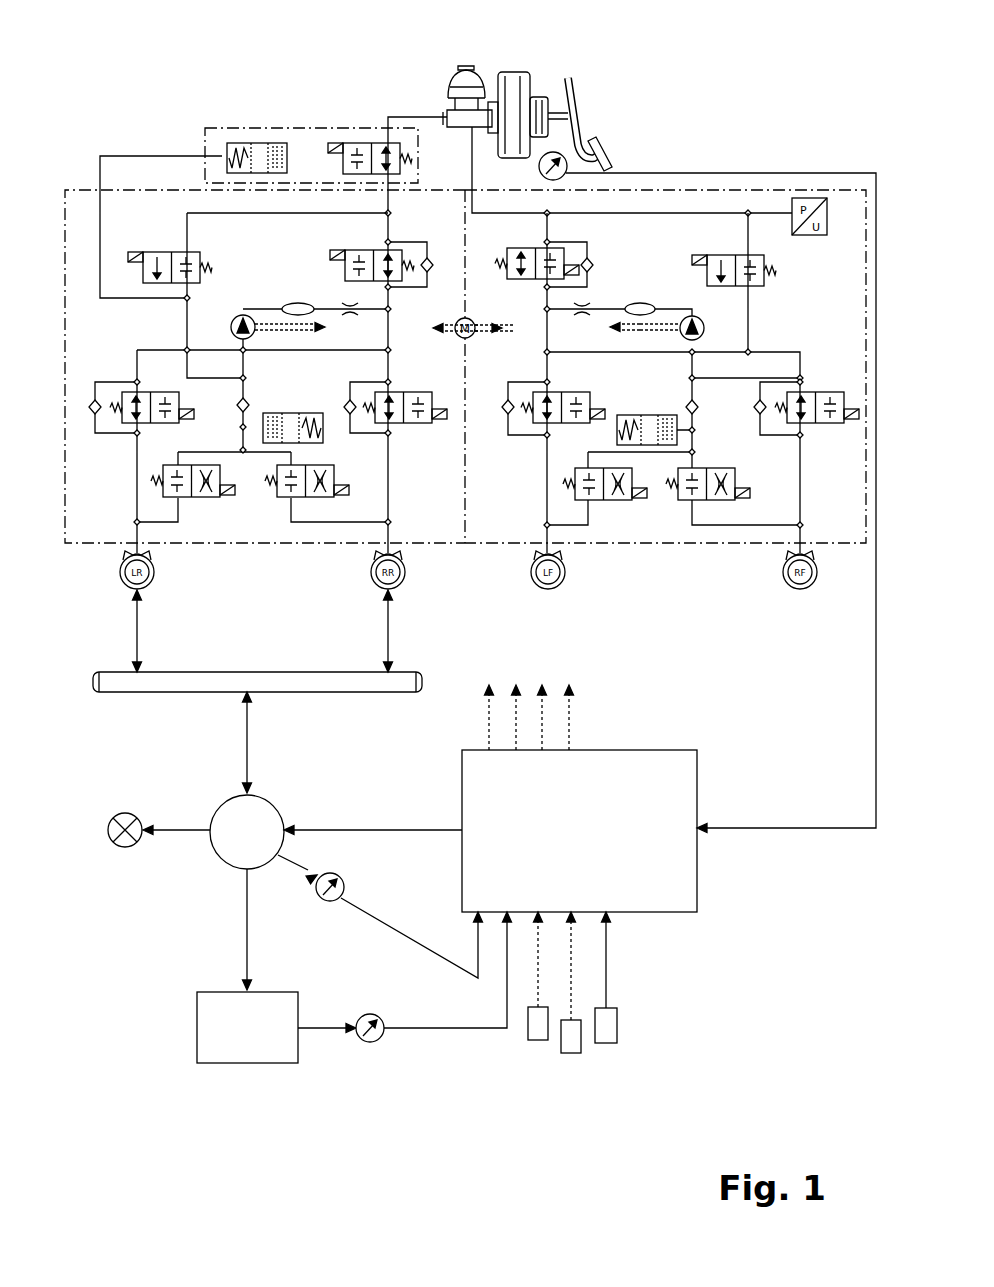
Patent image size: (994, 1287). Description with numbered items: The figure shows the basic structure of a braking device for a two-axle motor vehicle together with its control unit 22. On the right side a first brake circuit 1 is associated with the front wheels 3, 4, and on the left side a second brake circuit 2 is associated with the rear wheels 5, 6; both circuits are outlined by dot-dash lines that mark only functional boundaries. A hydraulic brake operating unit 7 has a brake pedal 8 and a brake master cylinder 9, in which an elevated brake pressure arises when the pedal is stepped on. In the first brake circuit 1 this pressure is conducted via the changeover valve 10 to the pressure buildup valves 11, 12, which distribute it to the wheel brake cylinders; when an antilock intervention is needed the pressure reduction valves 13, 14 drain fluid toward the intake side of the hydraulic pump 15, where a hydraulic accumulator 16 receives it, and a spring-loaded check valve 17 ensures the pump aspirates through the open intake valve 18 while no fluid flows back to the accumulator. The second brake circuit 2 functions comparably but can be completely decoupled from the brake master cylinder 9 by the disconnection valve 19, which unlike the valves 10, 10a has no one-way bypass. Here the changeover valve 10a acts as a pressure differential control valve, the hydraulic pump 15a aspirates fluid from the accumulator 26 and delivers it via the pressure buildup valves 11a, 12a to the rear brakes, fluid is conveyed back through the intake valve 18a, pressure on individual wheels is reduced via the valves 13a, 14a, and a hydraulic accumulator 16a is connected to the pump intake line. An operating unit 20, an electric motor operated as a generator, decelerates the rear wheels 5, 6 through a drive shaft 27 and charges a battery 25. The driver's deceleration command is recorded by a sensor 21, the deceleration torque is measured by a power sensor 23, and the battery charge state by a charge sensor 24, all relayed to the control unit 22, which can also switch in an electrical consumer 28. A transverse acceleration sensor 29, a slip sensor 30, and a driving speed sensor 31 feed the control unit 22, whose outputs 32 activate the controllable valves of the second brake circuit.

The first brake circuit 1 is at (667, 545).
The second brake circuit 2 is at (217, 545).
The front wheel 3 is at (815, 582).
The front wheel 4 is at (532, 582).
The rear wheel 5 is at (372, 577).
The rear wheel 6 is at (123, 582).
The hydraulic brake operating unit 7 is at (566, 60).
The brake pedal 8 is at (590, 138).
The brake master cylinder 9 is at (453, 130).
The changeover valve 10 is at (522, 283).
The changeover valve 10a is at (370, 280).
The pressure buildup valve 11 is at (570, 392).
The pressure buildup valve 11a is at (140, 392).
The pressure buildup valve 12 is at (828, 392).
The pressure buildup valve 12a is at (412, 423).
The pressure reduction valve 13 is at (627, 500).
The pressure reduction valve 13a is at (163, 470).
The pressure reduction valve 14 is at (738, 478).
The pressure reduction valve 14a is at (282, 498).
The hydraulic pump 15 is at (685, 318).
The hydraulic pump 15a is at (243, 315).
The hydraulic accumulator 16 is at (652, 415).
The hydraulic accumulator 16a is at (295, 413).
The spring-loaded check valve 17 is at (698, 410).
The intake valve 18 is at (760, 285).
The intake valve 18a is at (160, 252).
The disconnection valve 19 is at (365, 143).
The operating unit 20 is at (272, 806).
The sensor 21 is at (539, 168).
The control unit 22 is at (660, 913).
The power sensor 23 is at (341, 880).
The charge sensor 24 is at (368, 1014).
The battery 25 is at (197, 1030).
The accumulator 26 is at (258, 143).
The drive shaft 27 is at (178, 693).
The electrical consumer 28 is at (125, 847).
The transverse acceleration sensor 29 is at (535, 1042).
The slip sensor 30 is at (571, 1055).
The driving speed sensor 31 is at (608, 1044).
The outputs 32 is at (602, 713).